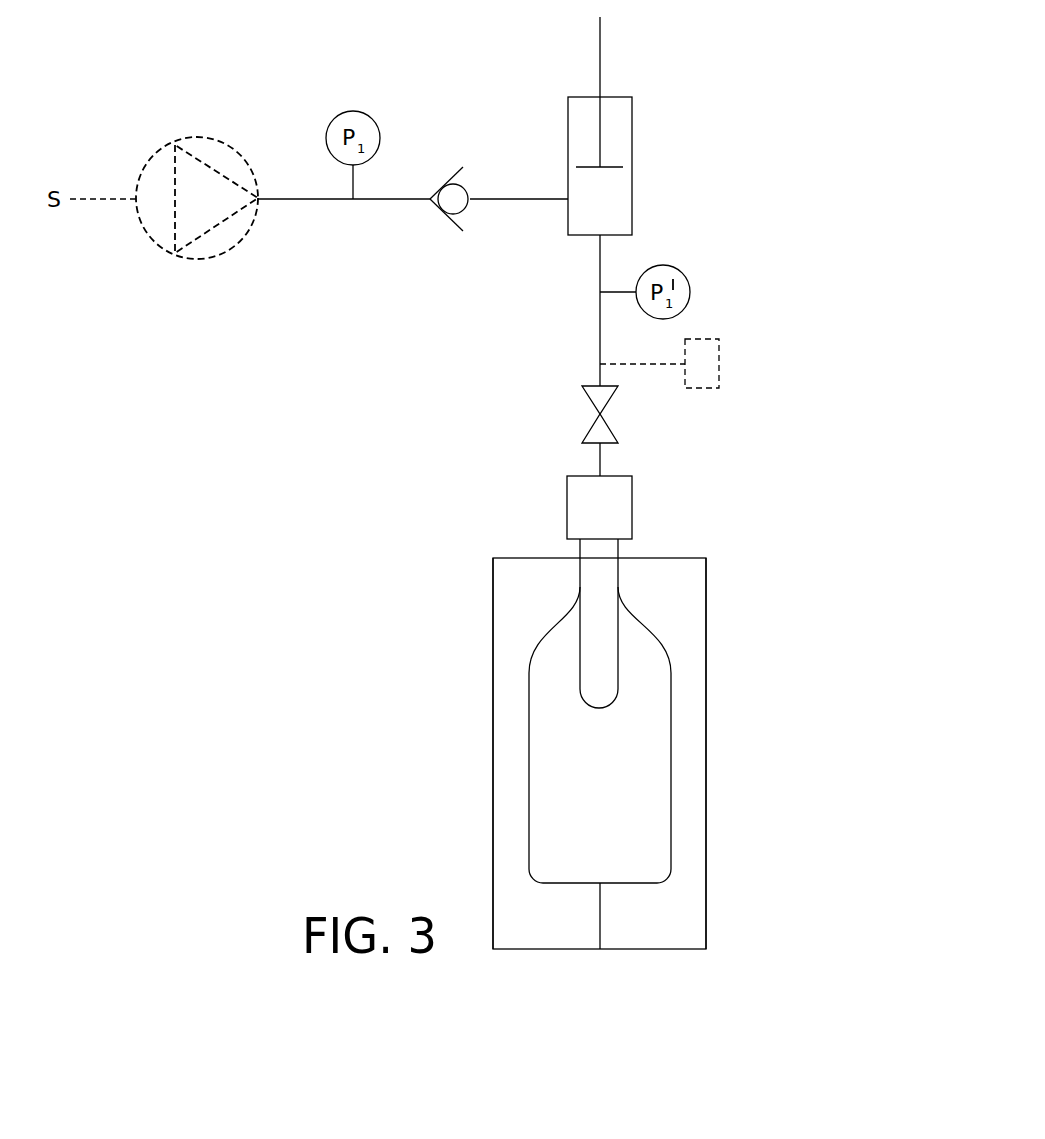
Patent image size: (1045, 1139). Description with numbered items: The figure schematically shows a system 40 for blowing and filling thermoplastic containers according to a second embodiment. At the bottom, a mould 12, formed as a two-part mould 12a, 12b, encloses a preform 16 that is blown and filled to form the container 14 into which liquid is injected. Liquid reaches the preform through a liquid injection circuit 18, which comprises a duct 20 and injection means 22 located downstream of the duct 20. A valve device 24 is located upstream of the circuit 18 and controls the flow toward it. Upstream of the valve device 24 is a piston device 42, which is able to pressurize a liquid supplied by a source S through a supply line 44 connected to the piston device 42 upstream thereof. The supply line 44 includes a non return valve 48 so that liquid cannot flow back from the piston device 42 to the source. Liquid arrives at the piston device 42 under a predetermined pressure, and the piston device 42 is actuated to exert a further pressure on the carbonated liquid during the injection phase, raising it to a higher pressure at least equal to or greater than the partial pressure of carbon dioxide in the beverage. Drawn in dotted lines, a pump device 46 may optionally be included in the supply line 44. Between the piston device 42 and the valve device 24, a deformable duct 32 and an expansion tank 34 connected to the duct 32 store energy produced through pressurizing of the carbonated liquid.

The mould 12 is at (745, 877).
The mould part 12a is at (505, 773).
The mould part 12b is at (693, 772).
The container 14 is at (545, 727).
The preform 16 is at (605, 686).
The liquid injection circuit 18 is at (545, 456).
The duct 20 is at (600, 460).
The injection means 22 is at (632, 504).
The valve device 24 is at (593, 427).
The deformable duct 32 is at (600, 332).
The expansion tank 34 is at (719, 383).
The system 40 is at (743, 49).
The piston device 42 is at (656, 183).
The supply line 44 is at (392, 201).
The pump device 46 is at (237, 266).
The non return valve 48 is at (446, 165).